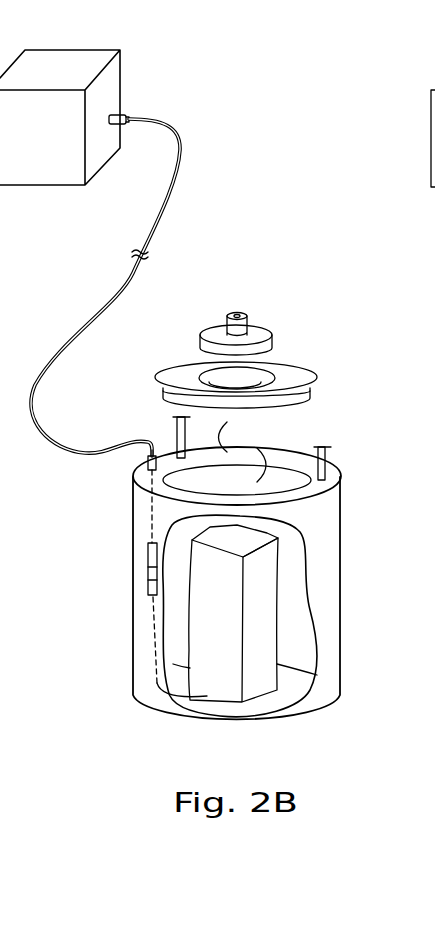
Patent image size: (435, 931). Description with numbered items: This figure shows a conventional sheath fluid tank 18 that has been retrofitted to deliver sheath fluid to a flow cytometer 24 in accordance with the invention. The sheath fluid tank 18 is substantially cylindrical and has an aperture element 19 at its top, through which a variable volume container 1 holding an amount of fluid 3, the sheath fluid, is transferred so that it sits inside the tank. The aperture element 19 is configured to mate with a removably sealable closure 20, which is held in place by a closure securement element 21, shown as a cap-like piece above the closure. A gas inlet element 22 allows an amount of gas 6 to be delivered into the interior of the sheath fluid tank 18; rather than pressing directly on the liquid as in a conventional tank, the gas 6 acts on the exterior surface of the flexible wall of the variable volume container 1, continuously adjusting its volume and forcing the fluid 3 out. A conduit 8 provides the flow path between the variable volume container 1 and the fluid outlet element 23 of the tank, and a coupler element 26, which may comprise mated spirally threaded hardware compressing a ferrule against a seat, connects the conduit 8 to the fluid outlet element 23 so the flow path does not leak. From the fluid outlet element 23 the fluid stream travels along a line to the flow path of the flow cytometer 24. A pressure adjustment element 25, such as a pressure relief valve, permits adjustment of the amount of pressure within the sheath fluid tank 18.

The variable volume container 1 is at (260, 638).
The fluid 3 is at (257, 600).
The gas 6 is at (243, 452).
The conduit 8 is at (155, 647).
The sheath fluid tank 18 is at (340, 577).
The aperture element 19 is at (283, 470).
The removably sealable closure 20 is at (300, 380).
The closure securement element 21 is at (263, 332).
The gas inlet element 22 is at (330, 452).
The fluid outlet element 23 is at (130, 478).
The flow cytometer 24 is at (110, 96).
The pressure adjustment element 25 is at (173, 423).
The coupler element 26 is at (150, 559).